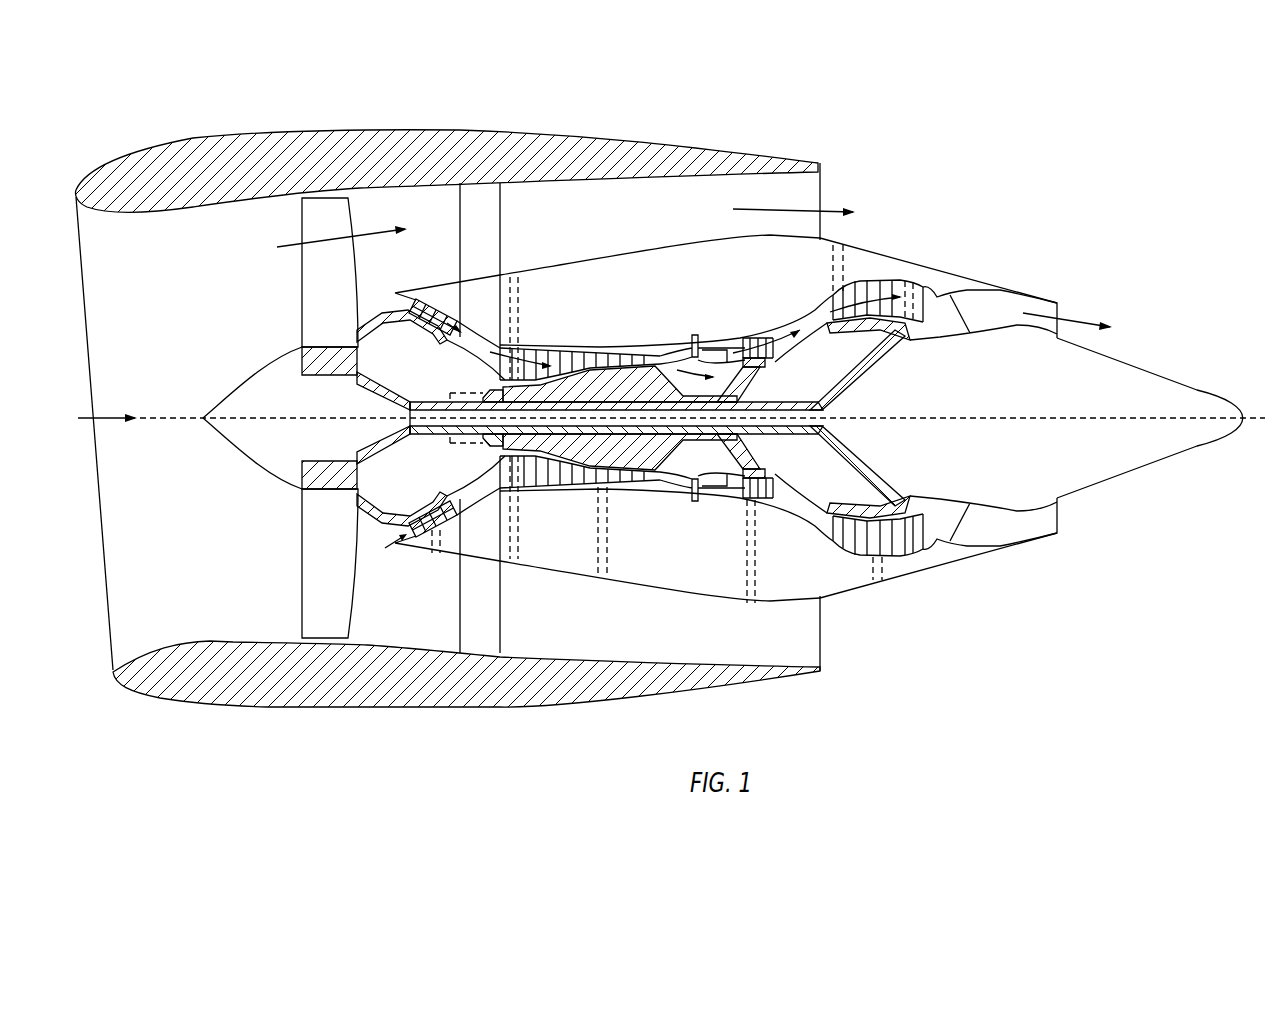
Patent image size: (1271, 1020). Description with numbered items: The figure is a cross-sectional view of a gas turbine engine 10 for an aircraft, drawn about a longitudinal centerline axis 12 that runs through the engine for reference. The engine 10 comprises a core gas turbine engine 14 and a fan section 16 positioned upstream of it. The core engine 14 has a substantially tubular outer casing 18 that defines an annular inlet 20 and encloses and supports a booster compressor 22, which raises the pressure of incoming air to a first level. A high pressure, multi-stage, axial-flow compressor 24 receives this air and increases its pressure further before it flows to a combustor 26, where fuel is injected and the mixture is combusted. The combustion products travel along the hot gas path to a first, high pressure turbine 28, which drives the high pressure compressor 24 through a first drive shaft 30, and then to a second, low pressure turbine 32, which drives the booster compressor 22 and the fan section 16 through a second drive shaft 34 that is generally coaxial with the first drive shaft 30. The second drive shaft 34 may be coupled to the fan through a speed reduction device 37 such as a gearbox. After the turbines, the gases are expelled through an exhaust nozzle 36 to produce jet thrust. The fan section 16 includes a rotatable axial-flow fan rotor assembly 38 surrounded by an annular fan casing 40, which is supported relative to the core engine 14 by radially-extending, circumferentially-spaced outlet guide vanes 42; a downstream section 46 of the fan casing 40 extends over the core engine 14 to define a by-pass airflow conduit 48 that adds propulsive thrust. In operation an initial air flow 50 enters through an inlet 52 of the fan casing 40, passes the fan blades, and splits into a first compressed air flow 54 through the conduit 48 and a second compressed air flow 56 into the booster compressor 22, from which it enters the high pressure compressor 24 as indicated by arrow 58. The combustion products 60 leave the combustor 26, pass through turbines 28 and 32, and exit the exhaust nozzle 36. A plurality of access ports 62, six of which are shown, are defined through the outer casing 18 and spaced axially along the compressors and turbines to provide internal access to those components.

The gas turbine engine 10 is at (970, 136).
The longitudinal centerline axis 12 is at (1007, 417).
The core gas turbine engine 14 is at (673, 303).
The fan section 16 is at (342, 119).
The outer casing 18 is at (660, 587).
The annular inlet 20 is at (397, 543).
The booster compressor 22 is at (473, 505).
The high pressure compressor 24 is at (530, 480).
The combustor 26 is at (717, 485).
The first (high pressure) turbine 28 is at (780, 487).
The first (high pressure) drive shaft 30 is at (713, 393).
The second (low pressure) turbine 32 is at (908, 553).
The second (low pressure) drive shaft 34 is at (470, 393).
The exhaust nozzle 36 is at (1057, 312).
The speed reduction device 37 is at (487, 460).
The fan rotor assembly 38 is at (357, 388).
The fan casing 40 is at (300, 593).
The outlet guide vanes 42 is at (500, 207).
The downstream section of the fan casing 46 is at (722, 146).
The by-pass airflow conduit 48 is at (638, 214).
The initial air flow 50 is at (103, 417).
The inlet 52 is at (113, 638).
The first compressed air flow 54 is at (312, 240).
The second compressed air flow 56 is at (379, 304).
The air flow entering the high pressure compressor 58 is at (521, 367).
The combustion products 60 is at (757, 338).
The access ports 62 is at (522, 297).